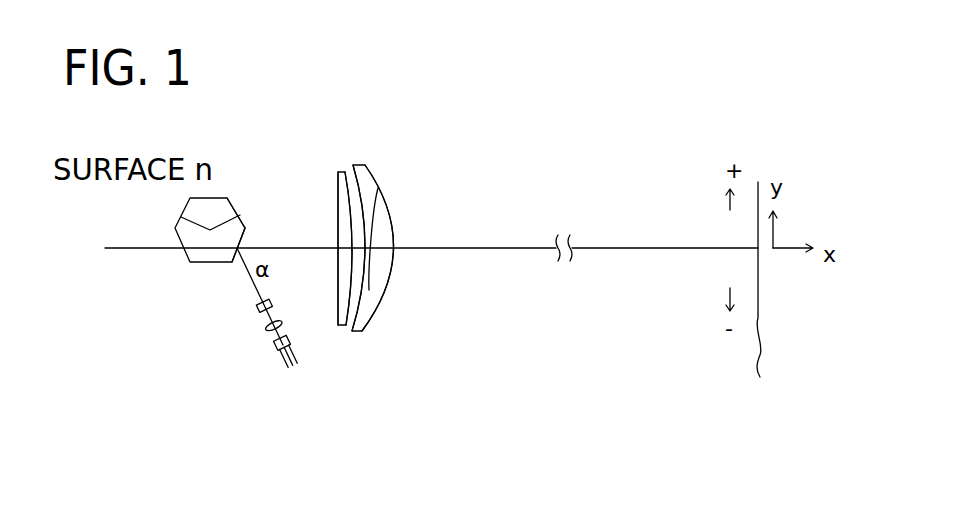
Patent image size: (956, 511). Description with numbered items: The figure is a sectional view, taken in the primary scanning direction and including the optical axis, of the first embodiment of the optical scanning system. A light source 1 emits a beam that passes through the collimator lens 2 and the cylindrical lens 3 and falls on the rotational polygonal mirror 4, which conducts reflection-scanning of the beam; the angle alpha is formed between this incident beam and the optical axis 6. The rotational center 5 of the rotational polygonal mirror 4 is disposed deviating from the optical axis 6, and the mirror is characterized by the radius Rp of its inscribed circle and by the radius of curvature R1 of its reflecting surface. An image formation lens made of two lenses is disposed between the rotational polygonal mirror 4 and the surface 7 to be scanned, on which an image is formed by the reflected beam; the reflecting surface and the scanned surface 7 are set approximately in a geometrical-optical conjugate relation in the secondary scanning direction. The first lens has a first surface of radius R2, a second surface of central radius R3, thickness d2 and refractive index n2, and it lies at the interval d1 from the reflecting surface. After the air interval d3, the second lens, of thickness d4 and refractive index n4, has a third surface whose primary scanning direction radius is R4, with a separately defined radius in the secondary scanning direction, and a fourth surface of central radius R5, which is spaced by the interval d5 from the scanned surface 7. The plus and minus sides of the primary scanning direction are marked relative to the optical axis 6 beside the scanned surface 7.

The semiconductor laser 1 is at (278, 362).
The collimator lens 2 is at (268, 335).
The cylindrical lens 3 is at (257, 317).
The rotational polygonal mirror 4 is at (197, 255).
The rotational center 5 is at (240, 215).
The optical axis 6 is at (110, 249).
The surface to be scanned 7 is at (765, 299).
The radius of inscribed circle of the rotational polygonal mirror Rp is at (210, 214).
The radius of curvature of reflecting surface of rotational polygonal mirror R1 is at (233, 262).
The radius of curvature of the first surface R2 is at (338, 268).
The central radius of curvature of the second surface R3 is at (345, 308).
The radius of curvature of the third surface in the primary scanning direction secti R4 is at (369, 290).
The central radius of curvature of the fourth surface R5 is at (370, 322).
The interval between reflecting surface and first surface d1 is at (278, 247).
The thickness of the first lens d2 is at (338, 222).
The interval between first and second lenses d3 is at (368, 208).
The thickness of the second lens d4 is at (392, 230).
The interval between fourth surface and surface to be scanned d5 is at (500, 248).
The index of refraction of the first lens n2 is at (338, 178).
The index of refraction of the second lens n4 is at (367, 180).